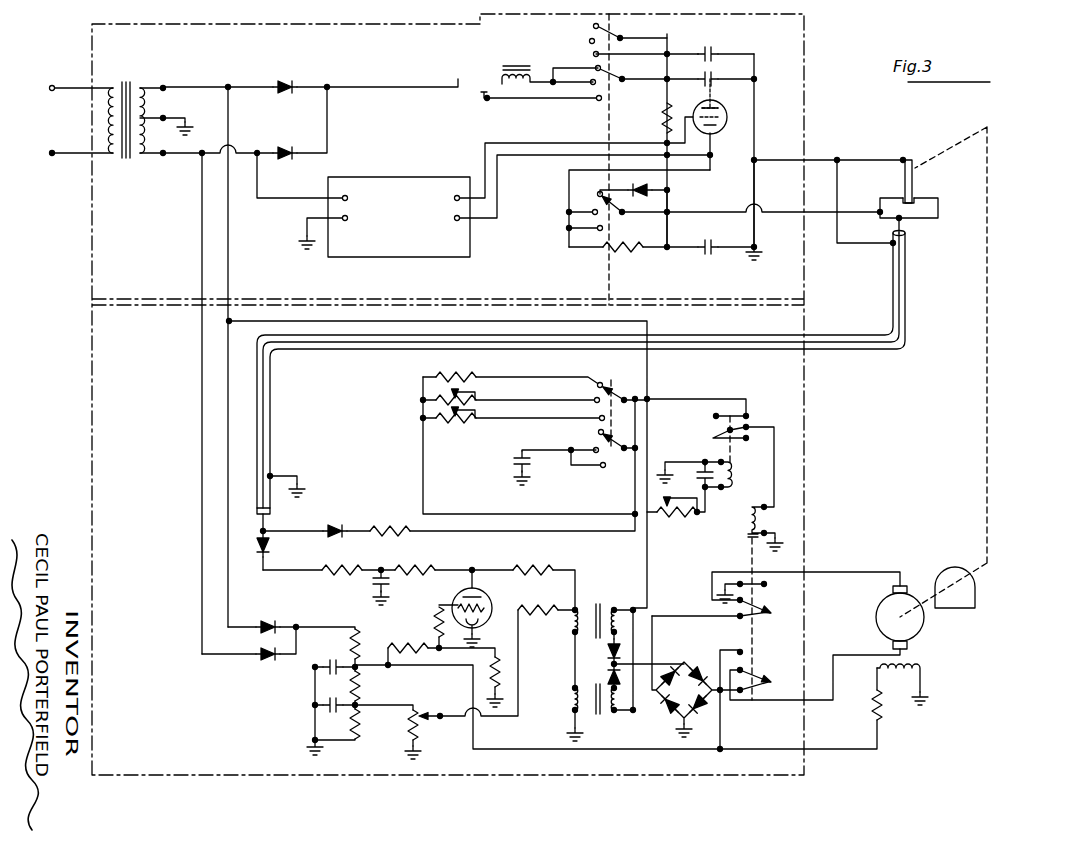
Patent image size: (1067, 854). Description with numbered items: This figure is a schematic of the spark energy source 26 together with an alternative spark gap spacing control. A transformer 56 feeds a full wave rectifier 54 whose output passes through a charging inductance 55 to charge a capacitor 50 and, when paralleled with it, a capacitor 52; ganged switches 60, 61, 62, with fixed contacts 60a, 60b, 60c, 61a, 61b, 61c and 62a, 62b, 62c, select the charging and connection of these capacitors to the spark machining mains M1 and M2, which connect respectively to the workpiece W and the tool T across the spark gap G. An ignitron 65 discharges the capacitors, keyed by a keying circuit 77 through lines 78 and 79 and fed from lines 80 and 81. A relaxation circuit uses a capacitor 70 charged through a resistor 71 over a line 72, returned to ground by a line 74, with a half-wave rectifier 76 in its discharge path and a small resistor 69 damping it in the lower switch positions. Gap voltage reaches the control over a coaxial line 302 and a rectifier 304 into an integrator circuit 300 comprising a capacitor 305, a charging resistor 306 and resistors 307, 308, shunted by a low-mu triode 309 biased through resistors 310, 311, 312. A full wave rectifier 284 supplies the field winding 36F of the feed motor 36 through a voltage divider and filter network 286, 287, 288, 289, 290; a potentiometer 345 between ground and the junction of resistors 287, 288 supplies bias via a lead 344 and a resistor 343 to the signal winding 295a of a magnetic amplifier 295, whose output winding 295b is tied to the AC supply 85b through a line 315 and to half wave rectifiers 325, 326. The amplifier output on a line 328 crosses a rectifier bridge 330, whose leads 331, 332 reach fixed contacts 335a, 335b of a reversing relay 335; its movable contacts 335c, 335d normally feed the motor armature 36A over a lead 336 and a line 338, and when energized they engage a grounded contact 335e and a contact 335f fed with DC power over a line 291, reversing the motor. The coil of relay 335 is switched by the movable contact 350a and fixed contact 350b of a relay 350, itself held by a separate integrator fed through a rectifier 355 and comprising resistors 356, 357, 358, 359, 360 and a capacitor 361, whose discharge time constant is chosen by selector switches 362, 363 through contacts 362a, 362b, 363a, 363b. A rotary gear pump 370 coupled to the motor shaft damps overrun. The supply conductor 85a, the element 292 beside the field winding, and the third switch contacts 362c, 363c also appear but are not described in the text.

The spark energy source 26 is at (810, 118).
The feed motor 36 is at (935, 655).
The motor armature 36A is at (912, 594).
The field winding 36F is at (902, 684).
The capacitor 50 is at (716, 78).
The capacitor 52 is at (716, 48).
The full wave rectifier 54 is at (300, 80).
The charging inductance 55 is at (540, 68).
The transformer 56 is at (131, 82).
The switch 60 is at (616, 73).
The fixed contact 60a is at (599, 99).
The fixed contact 60b is at (593, 83).
The fixed contact 60c is at (598, 68).
The switch 61 is at (616, 32).
The fixed contact 61a is at (594, 54).
The fixed contact 61b is at (590, 41).
The fixed contact 61c is at (594, 26).
The switch 62 is at (618, 218).
The fixed contact 62a is at (602, 232).
The fixed contact 62b is at (598, 214).
The fixed contact 62c is at (600, 196).
The ignitron 65 is at (722, 112).
The series resistor 69 is at (622, 252).
The capacitor 70 is at (726, 240).
The resistor 71 is at (660, 120).
The line 72 is at (668, 232).
The line 74 is at (756, 232).
The half-wave rectifier 76 is at (640, 186).
The keying circuit 77 is at (396, 176).
The line 78 is at (520, 143).
The line 79 is at (540, 155).
The line 80 is at (283, 198).
The line 81 is at (308, 218).
The supply conductor 85a is at (202, 451).
The AC supply 85b is at (228, 415).
The full wave rectifier 284 is at (290, 618).
The voltage divider and filter network component 286 is at (372, 634).
The resistor 287 is at (360, 688).
The resistor 288 is at (360, 726).
The voltage divider and filter network component 289 is at (340, 660).
The voltage divider and filter network component 290 is at (340, 698).
The line 291 is at (596, 752).
The resistor 292 is at (884, 710).
The magnetic amplifier 295 is at (570, 644).
The signal winding 295a is at (570, 680).
The excitation and output winding 295b is at (584, 606).
The integrator circuit 300 is at (354, 578).
The line 302 is at (346, 355).
The rectifier 304 is at (276, 548).
The capacitor 305 is at (390, 590).
The charging resistor 306 is at (338, 576).
The resistor 307 is at (408, 566).
The resistor 308 is at (518, 566).
The triode 309 is at (460, 594).
The resistor 310 is at (428, 644).
The resistor 311 is at (500, 660).
The resistor 312 is at (436, 620).
The line 315 is at (640, 386).
The half wave rectifier 325 is at (597, 652).
The half wave rectifier 326 is at (597, 676).
The line 328 is at (660, 660).
The rectifier bridge 330 is at (696, 676).
The positive line 331 is at (664, 614).
The negative line 332 is at (714, 676).
The reversing relay 335 is at (747, 538).
The fixed contact 335a is at (762, 616).
The fixed contact 335b is at (762, 686).
The movable contact 335c is at (762, 608).
The movable contact 335d is at (762, 674).
The fixed contact 335e is at (776, 580).
The fixed contact 335f is at (762, 660).
The lead 336 is at (812, 572).
The line 338 is at (814, 700).
The resistor 343 is at (554, 604).
The lead 344 is at (508, 718).
The potentiometer 345 is at (420, 734).
The relay 350 is at (736, 478).
The movable contact 350a is at (740, 428).
The fixed contact 350b is at (728, 410).
The rectifier 355 is at (336, 520).
The resistor 356 is at (388, 522).
The potentiometer 357 is at (478, 396).
The potentiometer 358 is at (462, 422).
The resistor 359 is at (470, 376).
The resistor 360 is at (658, 518).
The capacitor 361 is at (512, 464).
The selector switch 362 is at (618, 390).
The fixed contact 362a is at (600, 419).
The fixed contact 362b is at (595, 401).
The switch contact 362c is at (598, 386).
The selector switch 363 is at (623, 456).
The fixed contact 363a is at (603, 468).
The fixed contact 363b is at (580, 454).
The switch contact 363c is at (599, 433).
The rotary gear pump 370 is at (960, 608).
The spark machining main M1 is at (866, 208).
The spark machining main M2 is at (884, 158).
The tool T is at (914, 180).
The spark gap G is at (920, 196).
The workpiece W is at (938, 208).